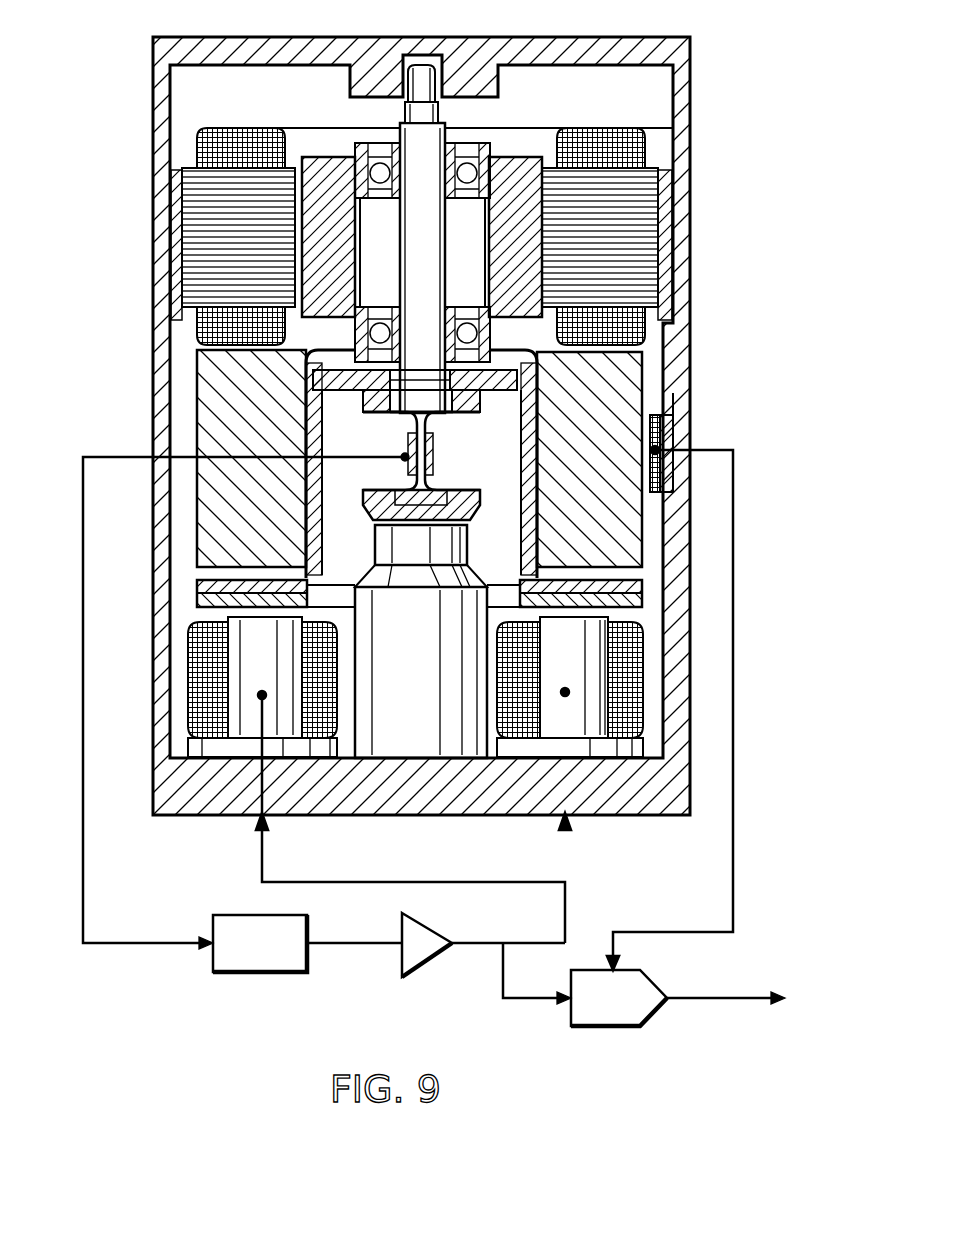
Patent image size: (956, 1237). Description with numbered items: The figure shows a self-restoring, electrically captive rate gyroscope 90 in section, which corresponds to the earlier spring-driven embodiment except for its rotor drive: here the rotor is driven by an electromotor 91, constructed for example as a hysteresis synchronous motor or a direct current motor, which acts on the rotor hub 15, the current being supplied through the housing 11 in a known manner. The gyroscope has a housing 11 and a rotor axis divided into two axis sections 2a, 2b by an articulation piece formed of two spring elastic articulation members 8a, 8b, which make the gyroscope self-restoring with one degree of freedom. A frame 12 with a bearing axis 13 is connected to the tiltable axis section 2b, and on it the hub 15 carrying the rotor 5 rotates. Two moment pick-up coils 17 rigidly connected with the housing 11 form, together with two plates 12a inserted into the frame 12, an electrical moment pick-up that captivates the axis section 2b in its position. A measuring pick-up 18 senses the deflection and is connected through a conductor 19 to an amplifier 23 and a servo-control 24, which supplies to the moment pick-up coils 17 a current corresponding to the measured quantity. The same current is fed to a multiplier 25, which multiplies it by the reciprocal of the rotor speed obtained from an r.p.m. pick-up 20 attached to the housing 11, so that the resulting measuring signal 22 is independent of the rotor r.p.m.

The housing 11 is at (683, 113).
The hub 15 is at (490, 142).
The electromotor 91 is at (212, 263).
The rate gyroscope 90 is at (426, 436).
The bearing axis 13 is at (422, 250).
The rotor 5 is at (232, 523).
The frame 12 is at (523, 403).
The tiltable axis section 2b is at (385, 363).
The spring elastic articulation member 8a is at (430, 432).
The spring elastic articulation member 8b is at (432, 436).
The measuring pick-up 18 is at (407, 460).
The axis section 2a is at (402, 727).
The plates 12a is at (200, 600).
The moment pick-up coils 17 is at (247, 712).
The r.p.m. pick-up 20 is at (657, 450).
The conductor 19 is at (128, 947).
The amplifier 23 is at (264, 955).
The servo-control 24 is at (423, 950).
The multiplier 25 is at (606, 1013).
The measuring signal 22 is at (776, 1005).